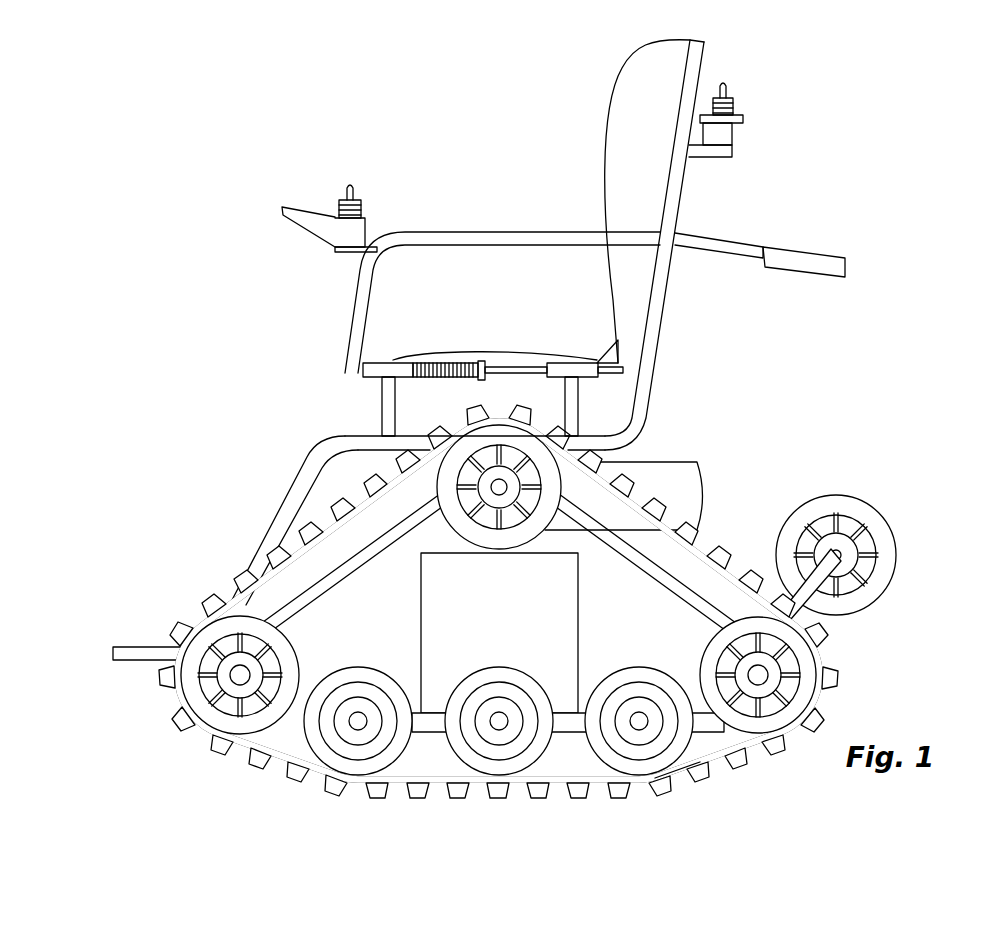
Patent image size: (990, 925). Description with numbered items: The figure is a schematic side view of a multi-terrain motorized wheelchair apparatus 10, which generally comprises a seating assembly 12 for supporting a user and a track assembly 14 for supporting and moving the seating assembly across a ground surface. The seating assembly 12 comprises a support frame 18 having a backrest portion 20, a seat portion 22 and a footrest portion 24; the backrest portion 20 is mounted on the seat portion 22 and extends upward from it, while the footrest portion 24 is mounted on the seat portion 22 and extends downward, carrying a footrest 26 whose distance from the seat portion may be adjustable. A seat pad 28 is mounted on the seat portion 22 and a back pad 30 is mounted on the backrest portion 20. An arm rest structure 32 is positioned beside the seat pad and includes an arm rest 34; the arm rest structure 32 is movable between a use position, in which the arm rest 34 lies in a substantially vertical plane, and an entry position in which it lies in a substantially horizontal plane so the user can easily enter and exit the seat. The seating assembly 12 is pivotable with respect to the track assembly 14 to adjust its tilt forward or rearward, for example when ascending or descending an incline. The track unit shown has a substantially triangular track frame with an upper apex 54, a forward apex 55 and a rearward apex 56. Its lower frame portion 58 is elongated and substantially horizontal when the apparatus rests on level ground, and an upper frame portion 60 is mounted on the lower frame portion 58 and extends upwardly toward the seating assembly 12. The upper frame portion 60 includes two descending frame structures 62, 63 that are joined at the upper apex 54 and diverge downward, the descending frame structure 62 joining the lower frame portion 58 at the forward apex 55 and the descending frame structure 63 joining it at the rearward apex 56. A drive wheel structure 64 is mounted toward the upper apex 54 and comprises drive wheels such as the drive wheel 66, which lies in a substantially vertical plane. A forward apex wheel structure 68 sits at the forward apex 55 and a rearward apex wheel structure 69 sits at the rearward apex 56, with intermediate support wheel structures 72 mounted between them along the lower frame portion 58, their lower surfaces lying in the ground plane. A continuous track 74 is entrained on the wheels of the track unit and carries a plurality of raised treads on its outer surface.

The multi-terrain motorized wheelchair apparatus 10 is at (305, 175).
The seating assembly 12 is at (718, 68).
The track assembly 14 is at (858, 638).
The support frame 18 is at (648, 353).
The backrest portion 20 is at (657, 305).
The seat portion 22 is at (363, 440).
The footrest portion 24 is at (300, 478).
The footrest 26 is at (143, 652).
The seat pad 28 is at (479, 355).
The back pad 30 is at (650, 103).
The arm rest structure 32 is at (442, 233).
The arm rest 34 is at (522, 240).
The upper apex 54 is at (567, 507).
The forward apex 55 is at (282, 620).
The rearward apex 56 is at (698, 707).
The lower frame portion 58 is at (575, 720).
The upper frame portion 60 is at (647, 567).
The descending frame structure 62 is at (332, 585).
The descending frame structure 63 is at (702, 608).
The drive wheel structure 64 is at (452, 607).
The drive wheel 66 is at (500, 535).
The forward apex wheel structure 68 is at (208, 715).
The rearward apex wheel structure 69 is at (813, 692).
The intermediate support wheel structure 72 is at (680, 772).
The continuous track 74 is at (293, 762).